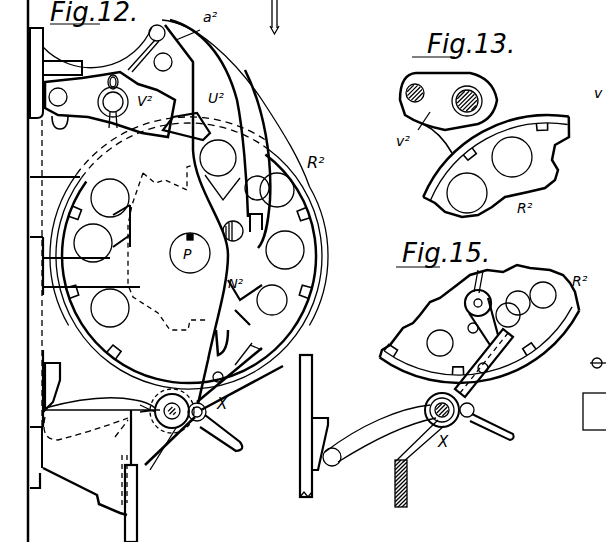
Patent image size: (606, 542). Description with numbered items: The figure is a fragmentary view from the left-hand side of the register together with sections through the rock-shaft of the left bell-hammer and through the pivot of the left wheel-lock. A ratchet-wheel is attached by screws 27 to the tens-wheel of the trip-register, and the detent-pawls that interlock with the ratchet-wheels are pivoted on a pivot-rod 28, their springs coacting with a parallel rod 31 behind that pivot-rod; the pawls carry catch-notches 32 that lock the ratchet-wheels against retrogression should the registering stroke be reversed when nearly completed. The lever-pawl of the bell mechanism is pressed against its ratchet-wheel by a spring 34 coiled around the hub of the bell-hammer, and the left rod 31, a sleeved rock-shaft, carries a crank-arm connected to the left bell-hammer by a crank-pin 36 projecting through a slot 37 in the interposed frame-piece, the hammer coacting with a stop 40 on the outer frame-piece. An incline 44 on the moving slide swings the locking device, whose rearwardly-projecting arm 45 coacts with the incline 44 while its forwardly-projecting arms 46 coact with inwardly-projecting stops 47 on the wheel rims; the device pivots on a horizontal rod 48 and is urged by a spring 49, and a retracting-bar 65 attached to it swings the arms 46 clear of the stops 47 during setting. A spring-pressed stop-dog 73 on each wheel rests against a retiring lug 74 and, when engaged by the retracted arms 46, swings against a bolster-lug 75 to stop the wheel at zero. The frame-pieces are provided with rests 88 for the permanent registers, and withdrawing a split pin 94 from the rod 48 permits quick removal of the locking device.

In FIG. 12, the screws 27 is at (229, 222).
In FIG. 12, the pivot-rod 28 is at (173, 62).
In FIG. 12, the parallel rod 31 is at (118, 108).
In FIG. 13, the parallel rod 31 is at (484, 98).
In FIG. 12, the catch-notches 32 is at (257, 188).
In FIG. 12, the springs 34 is at (144, 60).
In FIG. 12, the crank-pin 36 is at (67, 97).
In FIG. 13, the crank-pin 36 is at (405, 93).
In FIG. 12, the slot 37 is at (62, 129).
In FIG. 12, the stops 40 is at (72, 68).
In FIG. 12, the incline 44 is at (67, 386).
In FIG. 15, the incline 44 is at (320, 426).
In FIG. 12, the rearwardly-projecting arm 45 is at (102, 397).
In FIG. 15, the rearwardly-projecting arm 45 is at (379, 435).
In FIG. 12, the forwardly-projecting arms 46 is at (243, 368).
In FIG. 15, the forwardly-projecting arms 46 is at (493, 358).
In FIG. 12, the stops 47 is at (308, 292).
In FIG. 15, the stops 47 is at (530, 353).
In FIG. 12, the pivot-rod 48 is at (175, 415).
In FIG. 15, the pivot-rod 48 is at (437, 405).
In FIG. 12, the spring 49 is at (170, 447).
In FIG. 15, the spring 49 is at (401, 469).
In FIG. 12, the retracting-bars 65 is at (230, 437).
In FIG. 15, the retracting-bars 65 is at (494, 430).
In FIG. 12, the stop-dog 73 is at (212, 343).
In FIG. 15, the stop-dog 73 is at (488, 299).
In FIG. 15, the retiring lug 74 is at (468, 328).
In FIG. 15, the bolster-lugs 75 is at (520, 298).
In FIG. 12, the rests 88 is at (147, 503).
In FIG. 12, the split pin 94 is at (128, 420).